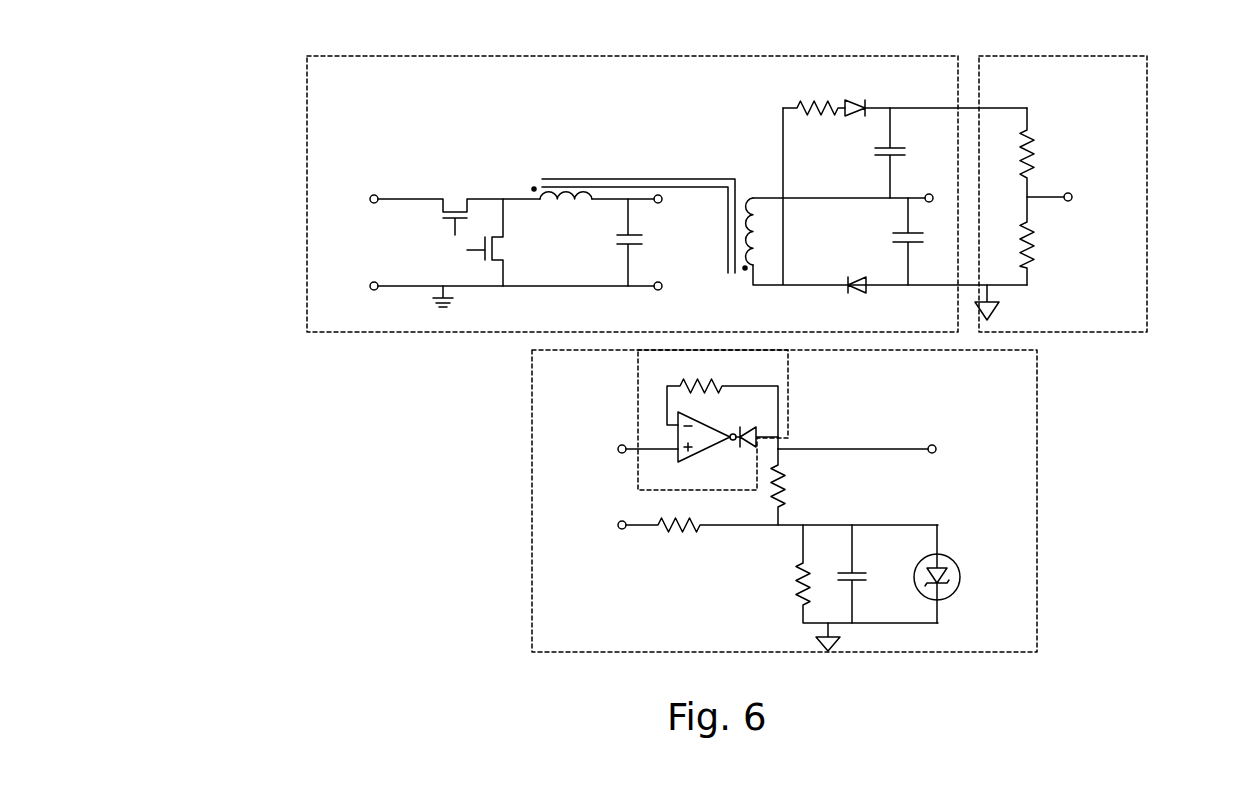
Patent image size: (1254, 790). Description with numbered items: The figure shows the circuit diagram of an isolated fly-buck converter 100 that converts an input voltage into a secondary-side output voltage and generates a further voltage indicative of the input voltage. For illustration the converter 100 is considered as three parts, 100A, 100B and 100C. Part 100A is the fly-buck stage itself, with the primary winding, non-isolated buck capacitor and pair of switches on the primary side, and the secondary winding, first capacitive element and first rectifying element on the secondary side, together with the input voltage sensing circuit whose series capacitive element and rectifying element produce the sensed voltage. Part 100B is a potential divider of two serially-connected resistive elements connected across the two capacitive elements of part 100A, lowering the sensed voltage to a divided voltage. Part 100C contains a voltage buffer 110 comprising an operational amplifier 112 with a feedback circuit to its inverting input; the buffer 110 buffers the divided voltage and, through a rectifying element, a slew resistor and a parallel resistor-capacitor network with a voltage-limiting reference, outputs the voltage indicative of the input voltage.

The isolated fly-buck converter 100 is at (241, 116).
The part 100A of the fly-buck converter 100A is at (307, 248).
The potential divider part 100B is at (1182, 152).
The part 100C of the isolated fly-buck converter 100C is at (1040, 542).
The voltage buffer 110 is at (790, 402).
The operational amplifier 112 is at (690, 462).